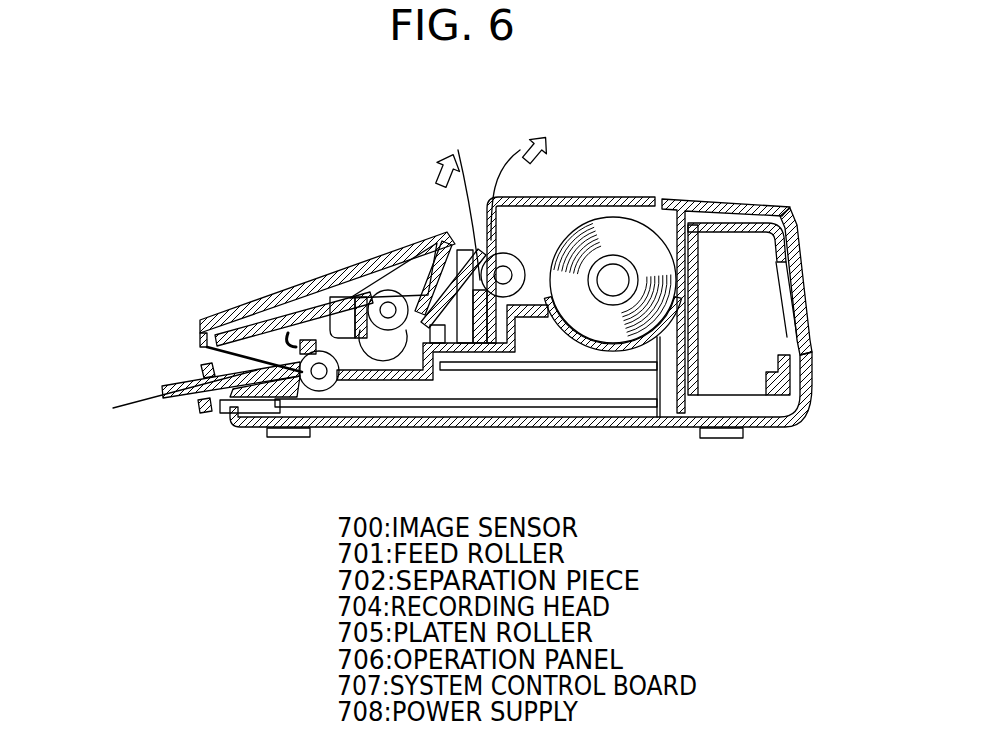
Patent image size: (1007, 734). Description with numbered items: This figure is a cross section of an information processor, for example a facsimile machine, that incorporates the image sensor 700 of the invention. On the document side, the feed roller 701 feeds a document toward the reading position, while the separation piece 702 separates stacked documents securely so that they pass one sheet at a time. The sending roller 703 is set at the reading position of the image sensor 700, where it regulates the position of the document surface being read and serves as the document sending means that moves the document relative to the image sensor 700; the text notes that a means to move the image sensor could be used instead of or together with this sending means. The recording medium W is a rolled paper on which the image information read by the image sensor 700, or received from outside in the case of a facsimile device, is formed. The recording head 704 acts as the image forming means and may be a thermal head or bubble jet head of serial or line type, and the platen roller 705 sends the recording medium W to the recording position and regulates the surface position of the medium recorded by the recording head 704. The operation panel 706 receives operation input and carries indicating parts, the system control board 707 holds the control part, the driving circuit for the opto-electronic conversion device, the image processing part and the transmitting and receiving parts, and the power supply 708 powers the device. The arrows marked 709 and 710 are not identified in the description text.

The image sensor 700 is at (386, 352).
The feed roller 701 is at (322, 392).
The separation piece 702 is at (312, 340).
The sending roller 703 is at (382, 290).
The recording head 704 is at (465, 320).
The platen roller 705 is at (500, 245).
The operation panel 706 is at (247, 303).
The system control board 707 is at (587, 412).
The power supply 708 is at (730, 235).
The recording medium insertion direction 709 is at (183, 356).
The recording medium discharge direction 710 is at (428, 198).
The recording medium W is at (620, 230).